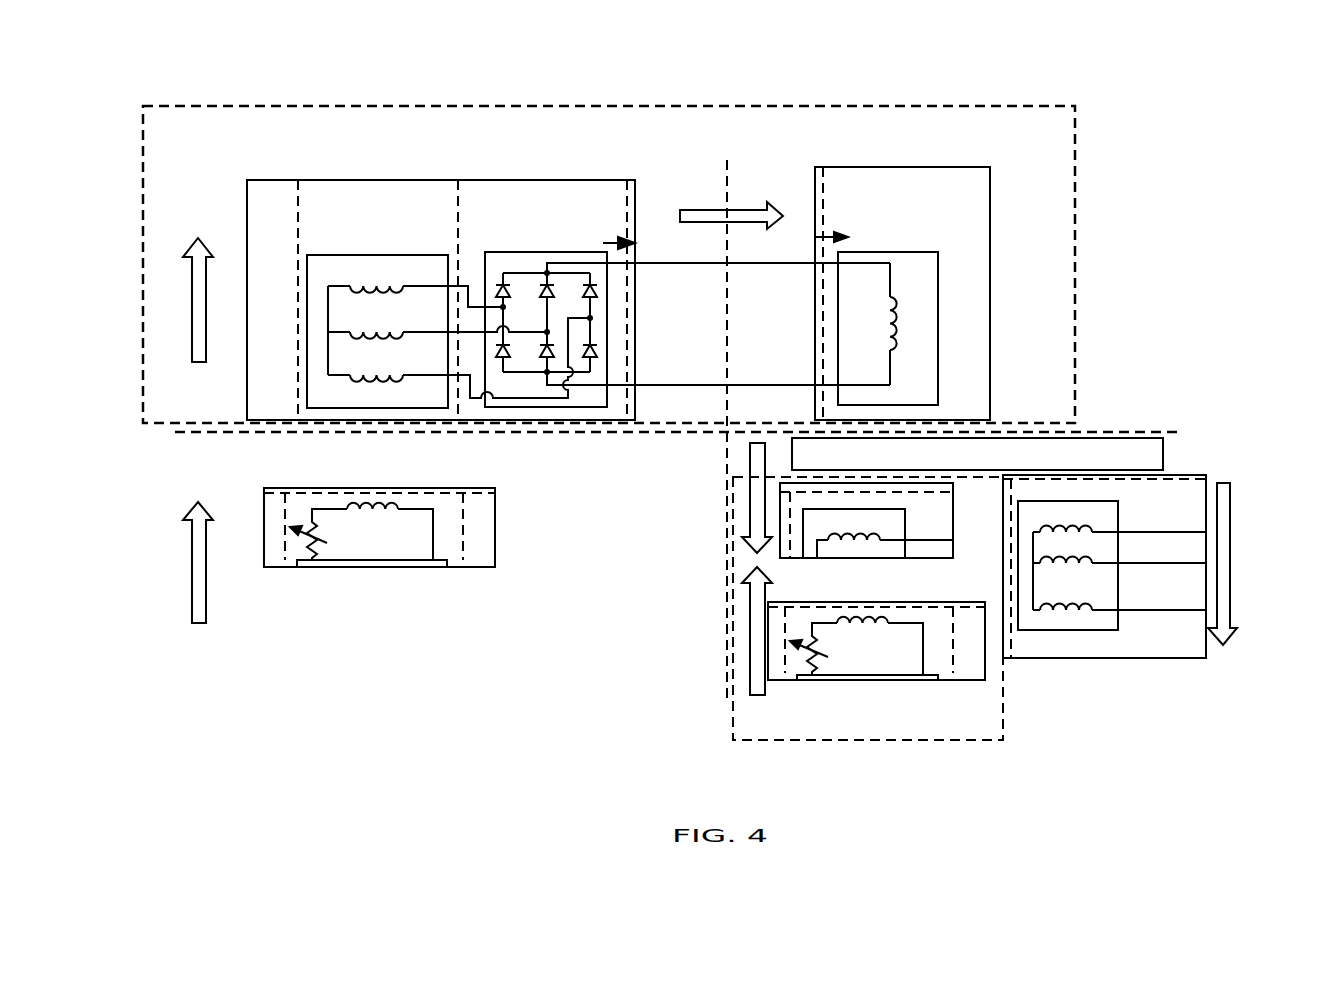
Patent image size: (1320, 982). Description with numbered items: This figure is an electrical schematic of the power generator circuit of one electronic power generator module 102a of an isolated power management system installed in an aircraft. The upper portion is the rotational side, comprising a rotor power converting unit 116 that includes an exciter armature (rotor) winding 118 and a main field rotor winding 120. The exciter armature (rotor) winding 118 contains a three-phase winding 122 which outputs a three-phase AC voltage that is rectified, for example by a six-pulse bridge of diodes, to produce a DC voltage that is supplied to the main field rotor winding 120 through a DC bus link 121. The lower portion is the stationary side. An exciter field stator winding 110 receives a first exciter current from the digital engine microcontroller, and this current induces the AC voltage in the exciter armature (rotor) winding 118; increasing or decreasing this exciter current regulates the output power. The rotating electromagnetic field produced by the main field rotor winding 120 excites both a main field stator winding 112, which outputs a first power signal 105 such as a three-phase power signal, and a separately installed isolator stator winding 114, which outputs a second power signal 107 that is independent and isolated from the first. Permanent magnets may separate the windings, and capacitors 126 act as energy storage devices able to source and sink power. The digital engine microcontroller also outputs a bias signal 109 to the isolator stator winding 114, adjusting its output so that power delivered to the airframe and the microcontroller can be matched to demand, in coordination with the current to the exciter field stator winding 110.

The rotor power converting unit 116 is at (400, 105).
The exciter armature (rotor) winding 118 is at (518, 180).
The main field rotor winding 120 is at (306, 297).
The DC bus link 121 is at (663, 262).
The three-phase winding 122 is at (578, 252).
The exciter field stator winding 110 is at (495, 527).
The electronic power generator module 102a is at (314, 683).
The capacitors 126 is at (1119, 433).
The isolator stator winding 114 is at (965, 742).
The second power signal 107 is at (747, 502).
The bias signal 109 is at (747, 634).
The main field stator winding 112 is at (1190, 660).
The first power signal 105 is at (1231, 543).